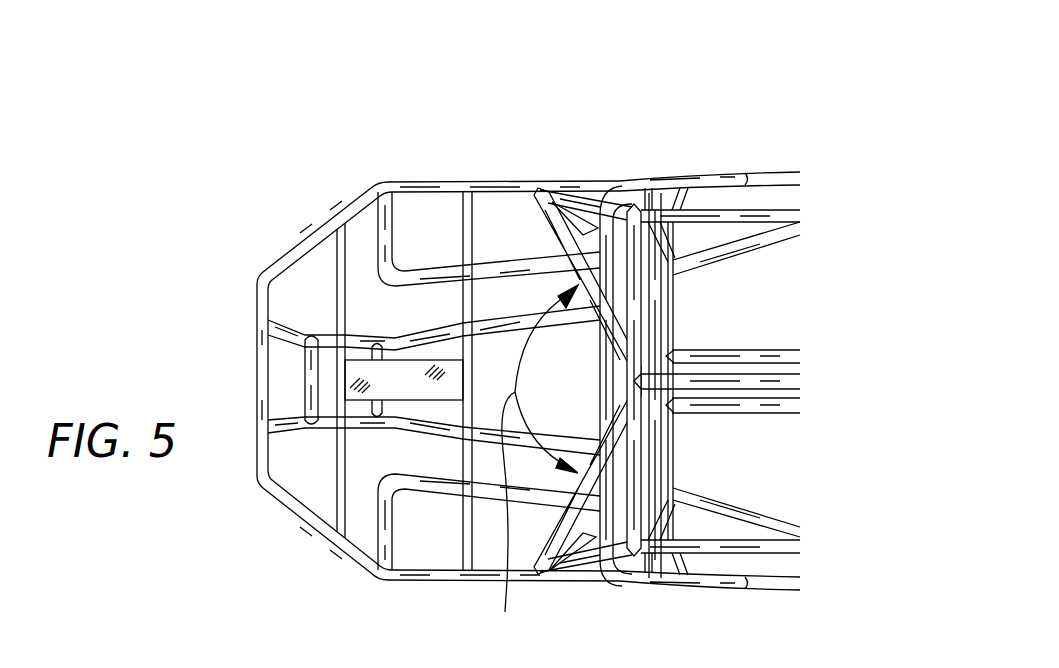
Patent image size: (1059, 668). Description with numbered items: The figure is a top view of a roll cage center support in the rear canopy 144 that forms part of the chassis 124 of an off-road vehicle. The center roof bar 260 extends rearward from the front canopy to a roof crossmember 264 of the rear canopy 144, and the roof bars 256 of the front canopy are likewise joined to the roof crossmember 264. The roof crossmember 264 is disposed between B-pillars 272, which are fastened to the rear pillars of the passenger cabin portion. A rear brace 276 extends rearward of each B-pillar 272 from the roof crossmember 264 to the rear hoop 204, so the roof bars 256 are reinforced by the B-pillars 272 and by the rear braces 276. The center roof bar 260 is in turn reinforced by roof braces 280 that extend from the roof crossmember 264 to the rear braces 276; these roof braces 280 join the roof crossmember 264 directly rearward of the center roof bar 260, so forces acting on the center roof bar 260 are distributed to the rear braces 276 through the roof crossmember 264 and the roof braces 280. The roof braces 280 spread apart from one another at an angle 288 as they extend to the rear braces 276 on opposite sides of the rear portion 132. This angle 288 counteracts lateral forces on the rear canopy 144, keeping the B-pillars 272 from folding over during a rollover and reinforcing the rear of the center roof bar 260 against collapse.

The chassis 124 is at (710, 101).
The rear portion 132 is at (301, 537).
The rear canopy 144 is at (580, 148).
The rear hoop 204 is at (320, 229).
The roof bars 256 is at (783, 212).
The center roof bar 260 is at (781, 383).
The roof crossmember 264 is at (638, 313).
The B-pillars 272 is at (608, 196).
The rear brace 276 is at (567, 190).
The roof braces 280 is at (553, 223).
The angle 288 is at (505, 612).